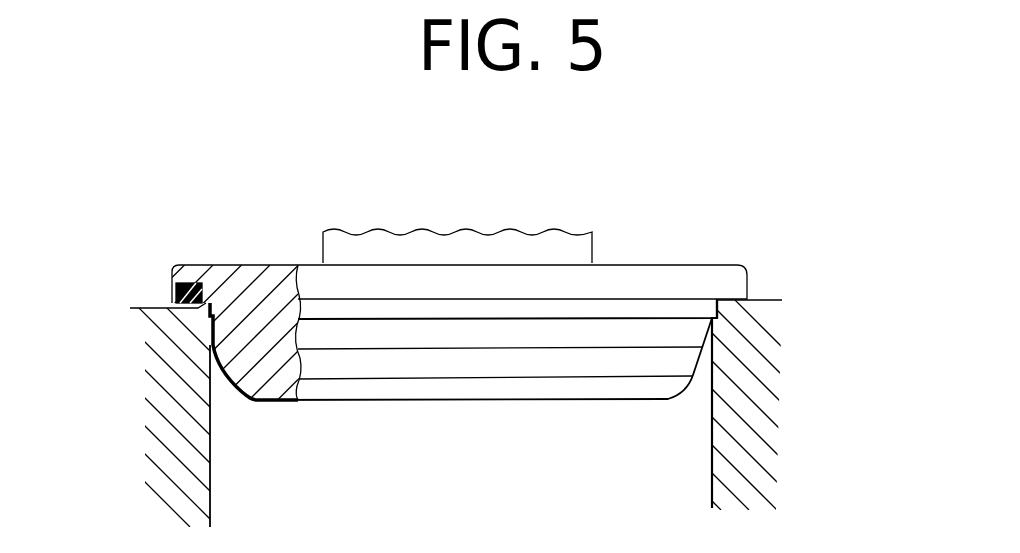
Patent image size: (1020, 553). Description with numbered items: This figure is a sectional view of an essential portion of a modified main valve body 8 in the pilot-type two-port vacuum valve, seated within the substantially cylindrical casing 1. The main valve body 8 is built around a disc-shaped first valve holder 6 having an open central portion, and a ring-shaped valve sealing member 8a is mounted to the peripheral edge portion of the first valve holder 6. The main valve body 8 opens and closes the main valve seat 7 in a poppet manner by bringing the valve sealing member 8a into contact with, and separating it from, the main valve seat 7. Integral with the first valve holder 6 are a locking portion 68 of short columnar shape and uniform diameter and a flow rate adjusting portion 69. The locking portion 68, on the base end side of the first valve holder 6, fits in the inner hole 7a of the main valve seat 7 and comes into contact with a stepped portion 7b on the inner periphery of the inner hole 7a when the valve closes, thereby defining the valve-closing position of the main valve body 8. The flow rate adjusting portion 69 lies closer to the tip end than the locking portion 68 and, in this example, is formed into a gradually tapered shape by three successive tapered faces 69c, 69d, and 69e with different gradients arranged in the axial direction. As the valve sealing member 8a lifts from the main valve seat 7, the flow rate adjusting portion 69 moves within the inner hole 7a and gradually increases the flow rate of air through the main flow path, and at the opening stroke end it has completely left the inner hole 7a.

The casing 1 is at (763, 318).
The first valve holder 6 is at (278, 282).
The main valve seat 7 is at (537, 399).
The inner hole 7a is at (713, 392).
The stepped portion 7b is at (720, 320).
The main valve body 8 is at (184, 229).
The valve sealing member 8a is at (190, 283).
The locking portion 68 is at (625, 307).
The flow rate adjusting portion 69 is at (393, 399).
The tapered face 69c is at (210, 343).
The tapered face 69d is at (223, 368).
The tapered face 69e is at (255, 398).